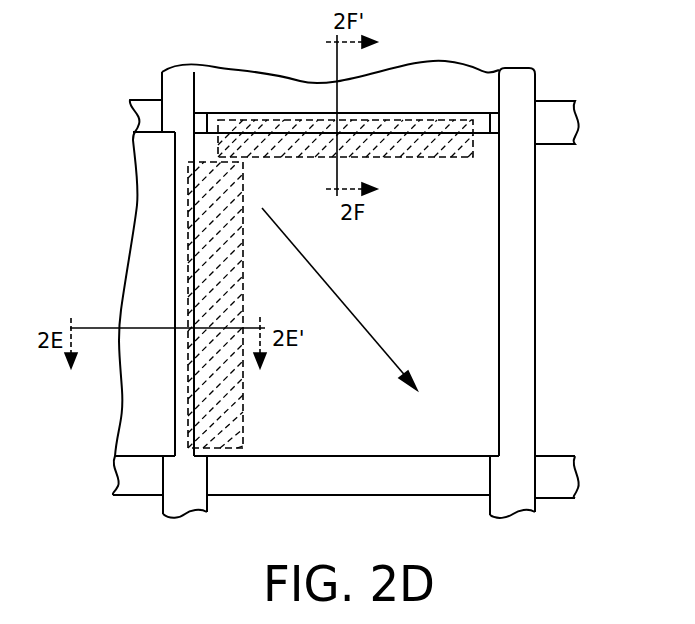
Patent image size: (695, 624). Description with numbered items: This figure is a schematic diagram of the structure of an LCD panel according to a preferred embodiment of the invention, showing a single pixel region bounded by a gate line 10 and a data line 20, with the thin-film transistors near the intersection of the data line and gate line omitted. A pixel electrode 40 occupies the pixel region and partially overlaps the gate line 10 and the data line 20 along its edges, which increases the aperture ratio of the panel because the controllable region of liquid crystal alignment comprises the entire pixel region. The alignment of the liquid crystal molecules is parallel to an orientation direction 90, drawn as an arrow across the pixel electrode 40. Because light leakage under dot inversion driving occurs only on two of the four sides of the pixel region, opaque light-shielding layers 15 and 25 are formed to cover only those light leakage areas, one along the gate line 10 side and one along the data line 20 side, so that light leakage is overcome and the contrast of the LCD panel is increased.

The gate line 10 is at (578, 116).
The opaque light-shielding layer 15 is at (450, 133).
The data line 20 is at (172, 86).
The opaque light-shielding layer 25 is at (212, 238).
The pixel electrode 40 is at (460, 263).
The orientation direction 90 is at (352, 312).